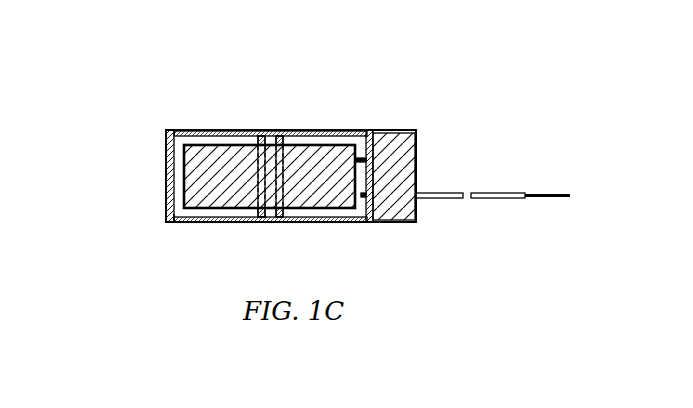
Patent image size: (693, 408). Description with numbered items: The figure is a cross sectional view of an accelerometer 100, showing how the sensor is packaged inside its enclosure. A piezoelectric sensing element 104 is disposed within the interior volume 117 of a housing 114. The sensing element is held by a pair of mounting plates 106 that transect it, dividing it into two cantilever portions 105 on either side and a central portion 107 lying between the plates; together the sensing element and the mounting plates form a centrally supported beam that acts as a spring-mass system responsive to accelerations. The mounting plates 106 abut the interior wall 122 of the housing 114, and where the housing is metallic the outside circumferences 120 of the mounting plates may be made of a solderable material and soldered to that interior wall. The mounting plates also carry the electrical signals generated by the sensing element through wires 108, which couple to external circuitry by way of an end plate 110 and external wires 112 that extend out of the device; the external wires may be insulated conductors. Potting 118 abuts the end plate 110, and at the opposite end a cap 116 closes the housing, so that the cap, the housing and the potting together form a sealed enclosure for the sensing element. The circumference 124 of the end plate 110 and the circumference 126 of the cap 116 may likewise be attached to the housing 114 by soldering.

The accelerometer 100 is at (590, 245).
The piezoelectric sensing element 104 is at (217, 131).
The cantilever portions 105 is at (328, 131).
The mounting plates 106 is at (262, 131).
The central portion 107 is at (272, 131).
The wires 108 is at (362, 198).
The end plate 110 is at (368, 131).
The external wires 112 is at (503, 193).
The housing 114 is at (187, 131).
The cap 116 is at (163, 132).
The interior volume 117 is at (307, 212).
The potting 118 is at (403, 131).
The circumferences of mounting plates 120 is at (280, 219).
The interior wall 122 is at (189, 209).
The circumference of end plate 124 is at (380, 232).
The circumference of cap 126 is at (165, 233).